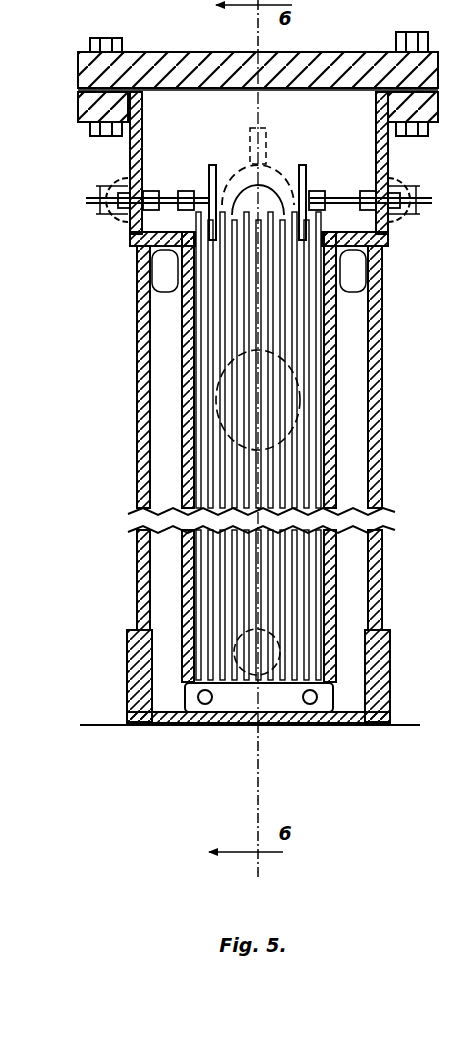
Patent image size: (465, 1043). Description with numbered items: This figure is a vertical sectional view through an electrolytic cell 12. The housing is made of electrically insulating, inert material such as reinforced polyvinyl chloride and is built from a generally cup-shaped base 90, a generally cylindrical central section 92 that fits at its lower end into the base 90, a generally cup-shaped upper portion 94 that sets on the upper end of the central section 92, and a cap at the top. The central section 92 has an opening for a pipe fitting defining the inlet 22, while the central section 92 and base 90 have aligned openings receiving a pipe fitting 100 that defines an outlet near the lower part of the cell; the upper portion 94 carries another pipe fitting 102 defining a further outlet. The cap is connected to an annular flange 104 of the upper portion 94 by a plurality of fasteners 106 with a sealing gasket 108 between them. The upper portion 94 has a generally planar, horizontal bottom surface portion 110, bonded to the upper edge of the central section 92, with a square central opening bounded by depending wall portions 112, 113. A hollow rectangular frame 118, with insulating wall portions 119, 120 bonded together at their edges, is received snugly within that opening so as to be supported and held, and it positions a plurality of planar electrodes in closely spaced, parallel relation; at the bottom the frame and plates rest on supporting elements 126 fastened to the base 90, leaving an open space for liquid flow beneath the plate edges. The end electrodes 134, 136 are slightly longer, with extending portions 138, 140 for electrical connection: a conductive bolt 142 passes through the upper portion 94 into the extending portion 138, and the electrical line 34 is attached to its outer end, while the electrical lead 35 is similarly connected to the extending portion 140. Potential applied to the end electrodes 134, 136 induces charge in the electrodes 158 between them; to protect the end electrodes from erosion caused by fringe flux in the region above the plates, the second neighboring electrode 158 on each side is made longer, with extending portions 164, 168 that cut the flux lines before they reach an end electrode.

The cell 12 is at (122, 424).
The inlet 22 is at (338, 360).
The electrical line 34 is at (112, 233).
The electrical lead 35 is at (410, 226).
The base 90 is at (128, 672).
The central section 92 is at (145, 512).
The upper portion 94 is at (132, 250).
The pipe fitting 100 is at (210, 612).
The pipe fitting 102 is at (279, 160).
The annular flange 104 is at (78, 100).
The fasteners 106 is at (108, 40).
The sealing gasket 108 is at (397, 77).
The bottom surface portion 110 is at (373, 272).
The wall portion 112 is at (138, 282).
The wall portion 113 is at (382, 295).
The frame 118 is at (182, 327).
The wall portion 119 is at (190, 454).
The wall portion 120 is at (372, 398).
The supporting element 126 is at (282, 700).
The end electrode 134 is at (152, 352).
The end electrode 136 is at (338, 334).
The extending portion 138 is at (212, 168).
The extending portion 140 is at (306, 172).
The bolt 142 is at (152, 196).
The electrode plate 158 is at (245, 487).
The extending portion 164 is at (258, 158).
The extending portion 168 is at (303, 165).